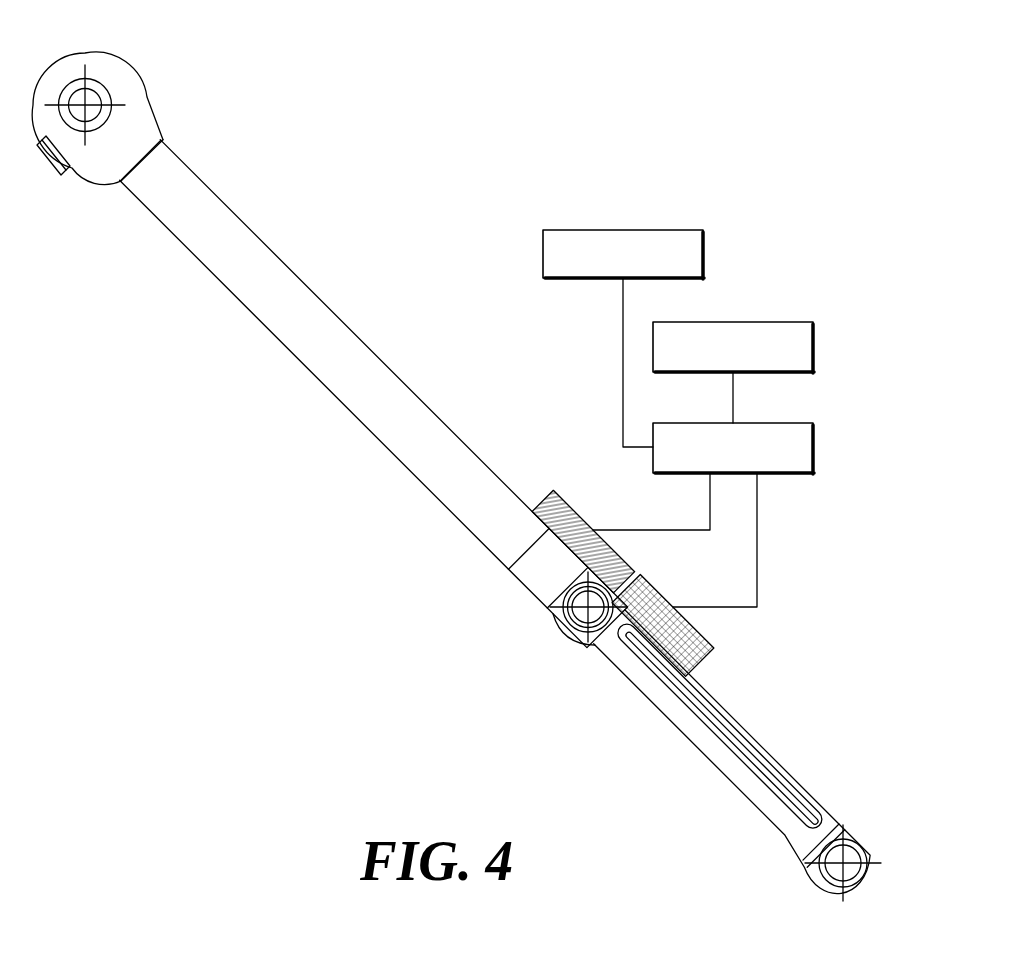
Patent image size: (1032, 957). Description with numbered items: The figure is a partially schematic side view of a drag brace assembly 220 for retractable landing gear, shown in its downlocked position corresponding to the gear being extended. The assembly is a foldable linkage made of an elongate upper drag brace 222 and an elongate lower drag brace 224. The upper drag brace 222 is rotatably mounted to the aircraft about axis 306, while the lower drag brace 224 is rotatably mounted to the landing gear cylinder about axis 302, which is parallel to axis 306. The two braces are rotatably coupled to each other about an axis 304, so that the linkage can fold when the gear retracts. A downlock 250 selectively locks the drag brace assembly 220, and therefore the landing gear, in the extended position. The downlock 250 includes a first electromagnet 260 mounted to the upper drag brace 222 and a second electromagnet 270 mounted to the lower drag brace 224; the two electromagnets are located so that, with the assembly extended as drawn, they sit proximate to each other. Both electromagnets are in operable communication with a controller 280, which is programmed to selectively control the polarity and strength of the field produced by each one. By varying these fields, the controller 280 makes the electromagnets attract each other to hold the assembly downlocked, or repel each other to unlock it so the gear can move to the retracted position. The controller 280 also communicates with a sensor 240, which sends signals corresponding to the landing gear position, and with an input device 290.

The drag brace assembly 220 is at (436, 598).
The upper drag brace 222 is at (258, 320).
The lower drag brace 224 is at (705, 748).
The sensor 240 is at (703, 251).
The downlock 250 is at (747, 628).
The first electromagnet 260 is at (571, 489).
The second electromagnet 270 is at (705, 655).
The controller 280 is at (813, 448).
The input device 290 is at (813, 346).
The axis 302 is at (855, 860).
The axis 304 is at (571, 629).
The axis 306 is at (96, 103).